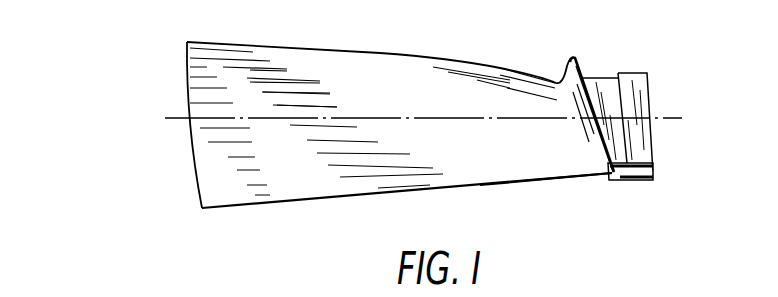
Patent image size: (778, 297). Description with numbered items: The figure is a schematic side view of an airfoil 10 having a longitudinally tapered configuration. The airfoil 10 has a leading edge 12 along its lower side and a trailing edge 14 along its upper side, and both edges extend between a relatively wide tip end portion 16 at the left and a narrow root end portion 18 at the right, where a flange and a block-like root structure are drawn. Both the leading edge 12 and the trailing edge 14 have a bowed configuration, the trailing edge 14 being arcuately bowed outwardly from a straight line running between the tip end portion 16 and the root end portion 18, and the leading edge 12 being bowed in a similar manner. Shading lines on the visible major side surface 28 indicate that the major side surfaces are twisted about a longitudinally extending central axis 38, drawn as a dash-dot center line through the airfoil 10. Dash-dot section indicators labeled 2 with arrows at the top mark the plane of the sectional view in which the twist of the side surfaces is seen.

The section line for FIG. 2 is at (218, 8).
The airfoil 10 is at (163, 198).
The leading edge 12 is at (318, 201).
The trailing edge 14 is at (363, 54).
The tip end portion 16 is at (191, 163).
The root end portion 18 is at (588, 152).
The major side surface 28 is at (500, 160).
The longitudinally extending central axis 38 is at (395, 116).